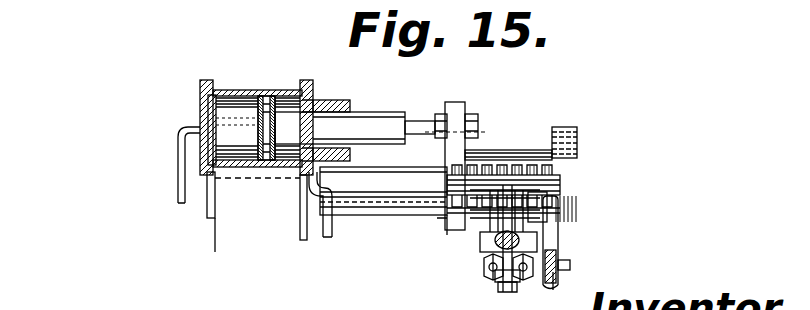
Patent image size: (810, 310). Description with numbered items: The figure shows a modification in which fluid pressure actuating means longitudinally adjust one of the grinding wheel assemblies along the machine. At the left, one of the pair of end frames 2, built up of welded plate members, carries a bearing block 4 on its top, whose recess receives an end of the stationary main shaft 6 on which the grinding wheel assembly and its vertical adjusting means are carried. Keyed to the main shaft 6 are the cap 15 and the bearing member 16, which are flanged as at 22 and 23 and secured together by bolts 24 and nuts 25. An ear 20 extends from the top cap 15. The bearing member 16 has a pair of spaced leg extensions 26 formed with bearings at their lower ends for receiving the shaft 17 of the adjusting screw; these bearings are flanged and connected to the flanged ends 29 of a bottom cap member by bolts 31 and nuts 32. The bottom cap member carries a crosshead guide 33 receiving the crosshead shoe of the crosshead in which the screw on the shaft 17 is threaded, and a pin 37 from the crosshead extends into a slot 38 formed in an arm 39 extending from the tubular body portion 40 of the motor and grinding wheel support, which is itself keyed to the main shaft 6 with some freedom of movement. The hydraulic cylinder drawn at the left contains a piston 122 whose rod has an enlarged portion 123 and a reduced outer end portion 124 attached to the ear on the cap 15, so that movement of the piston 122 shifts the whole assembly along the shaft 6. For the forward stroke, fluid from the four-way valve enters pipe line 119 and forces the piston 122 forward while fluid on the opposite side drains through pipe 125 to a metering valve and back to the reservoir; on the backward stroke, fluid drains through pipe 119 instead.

The end frame 2 is at (220, 232).
The bearing block 4 is at (210, 207).
The stationary main shaft 6 is at (390, 200).
The cap 15 is at (508, 140).
The bearing member 16 is at (452, 238).
The shaft 17 is at (495, 248).
The ear 20 is at (458, 106).
The flange 22 is at (537, 177).
The flange 23 is at (540, 193).
The bolts 24 is at (483, 167).
The nuts 25 is at (445, 218).
The leg extensions 26 is at (498, 225).
The flanged ends 29 is at (520, 240).
The bolts 31 is at (487, 277).
The nuts 32 is at (487, 273).
The crosshead guide 33 is at (500, 287).
The pin 37 is at (570, 266).
The slot 38 is at (560, 253).
The arm 39 is at (577, 291).
The tubular body portion 40 is at (593, 152).
The pipe line 119 is at (177, 172).
The piston 122 is at (270, 163).
The enlarged portion 123 is at (363, 120).
The reduced outer end portion 124 is at (262, 90).
The pipe 125 is at (333, 232).